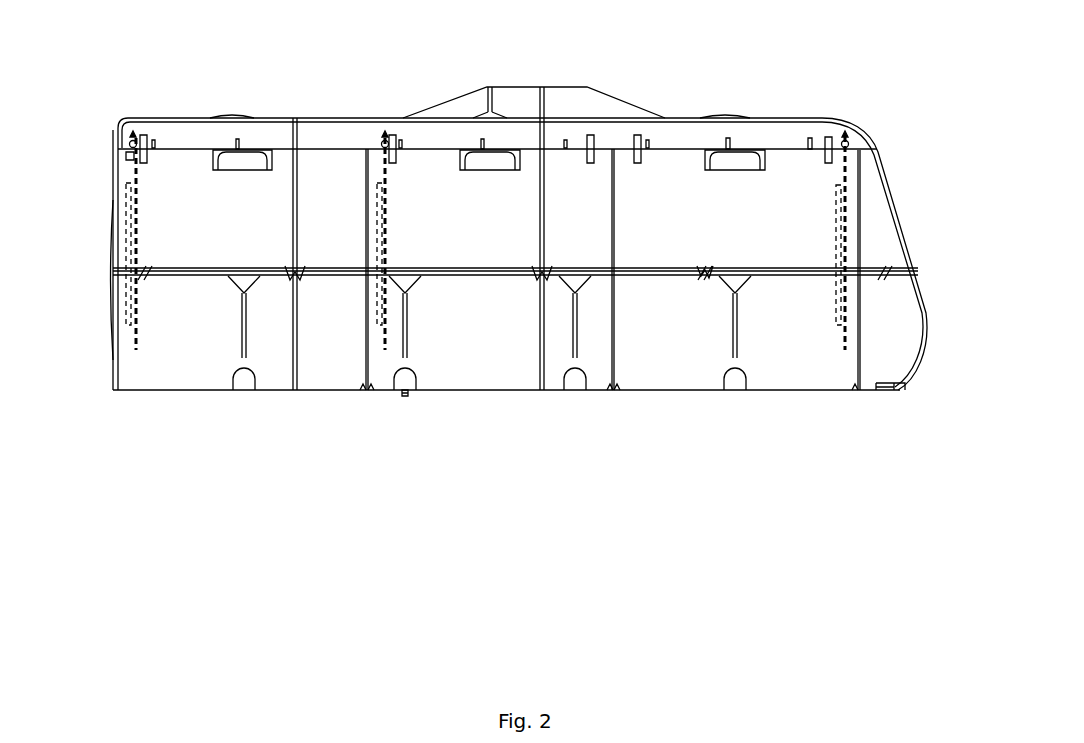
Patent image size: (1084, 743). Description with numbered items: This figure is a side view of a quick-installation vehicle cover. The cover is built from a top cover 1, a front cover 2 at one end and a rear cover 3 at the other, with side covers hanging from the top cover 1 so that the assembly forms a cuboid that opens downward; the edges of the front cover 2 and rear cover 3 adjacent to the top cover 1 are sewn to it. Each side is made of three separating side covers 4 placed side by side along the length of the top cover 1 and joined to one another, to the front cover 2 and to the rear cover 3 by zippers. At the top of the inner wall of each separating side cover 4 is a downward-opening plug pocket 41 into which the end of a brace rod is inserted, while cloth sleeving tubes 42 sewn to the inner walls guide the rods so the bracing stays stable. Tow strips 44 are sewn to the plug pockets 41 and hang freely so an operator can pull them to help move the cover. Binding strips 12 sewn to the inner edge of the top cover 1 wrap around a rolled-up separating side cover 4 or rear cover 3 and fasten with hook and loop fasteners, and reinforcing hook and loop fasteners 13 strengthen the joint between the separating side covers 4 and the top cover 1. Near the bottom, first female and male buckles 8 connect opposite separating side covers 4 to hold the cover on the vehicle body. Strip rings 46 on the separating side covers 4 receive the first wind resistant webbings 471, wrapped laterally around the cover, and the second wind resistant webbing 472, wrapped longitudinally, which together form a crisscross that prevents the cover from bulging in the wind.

The top cover 1 is at (348, 117).
The front cover 2 is at (906, 220).
The rear cover 3 is at (112, 250).
The separating side cover 4 is at (793, 348).
The first female and male buckles 8 is at (407, 396).
The binding strips 12 is at (730, 138).
The reinforcing hook and loop fasteners 13 is at (596, 154).
The plug pocket 41 is at (133, 134).
The sleeving tubes 42 is at (127, 205).
The tow strips 44 is at (127, 157).
The strip rings 46 is at (708, 283).
The first wind resistant webbings 471 is at (293, 190).
The second wind resistant webbing 472 is at (634, 276).